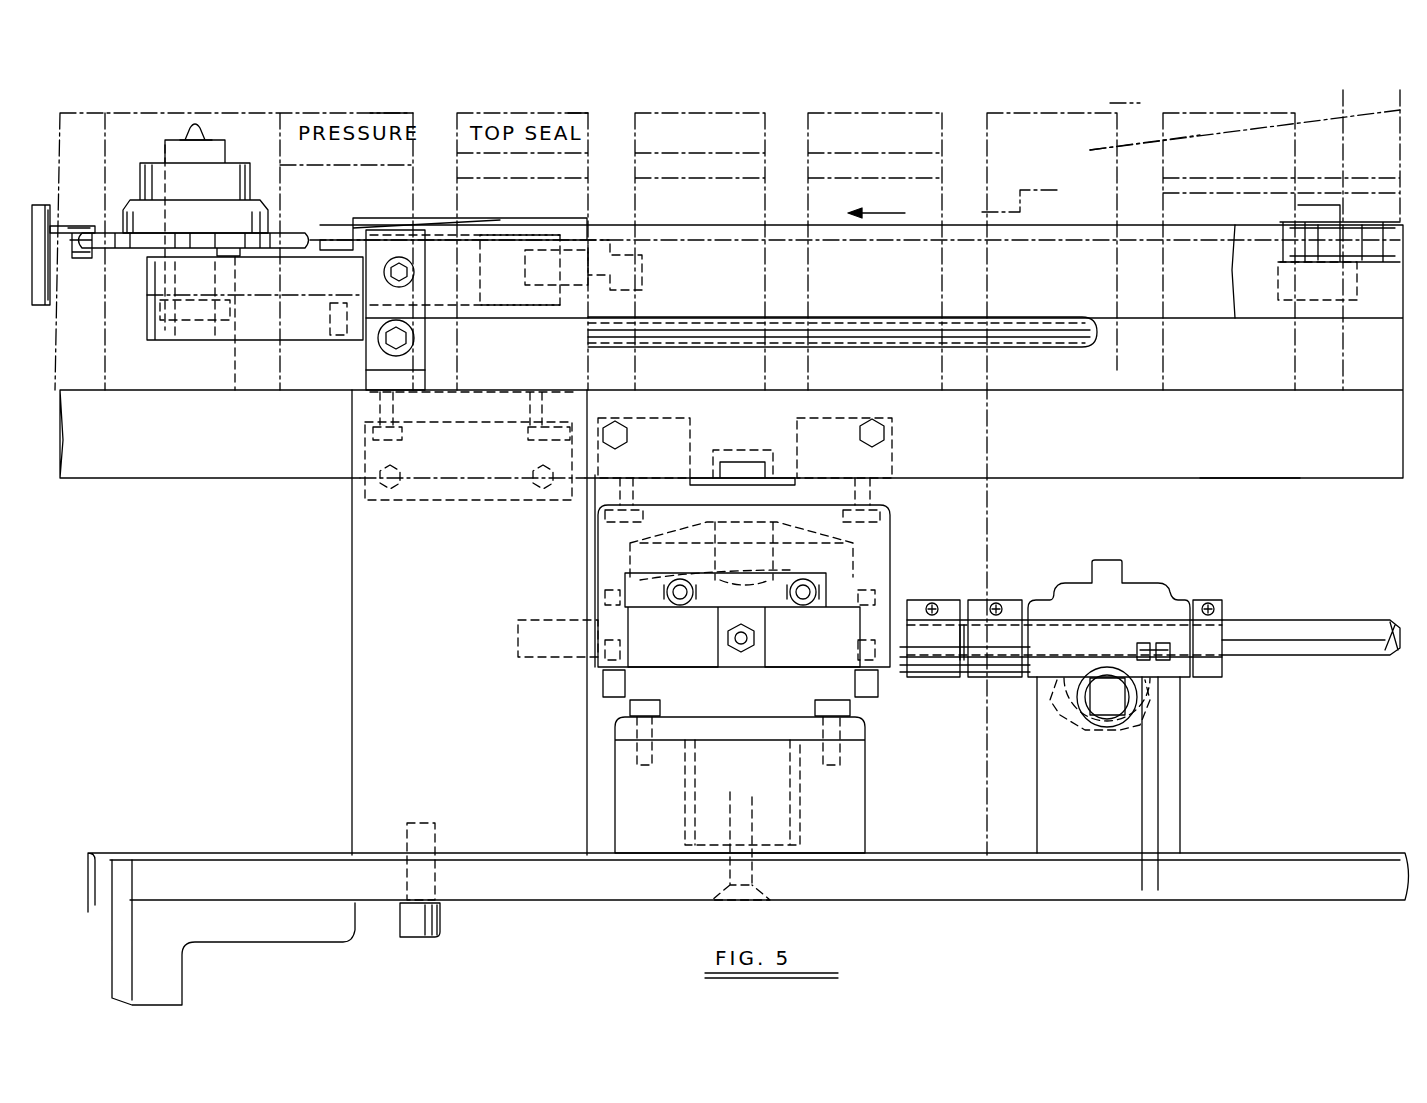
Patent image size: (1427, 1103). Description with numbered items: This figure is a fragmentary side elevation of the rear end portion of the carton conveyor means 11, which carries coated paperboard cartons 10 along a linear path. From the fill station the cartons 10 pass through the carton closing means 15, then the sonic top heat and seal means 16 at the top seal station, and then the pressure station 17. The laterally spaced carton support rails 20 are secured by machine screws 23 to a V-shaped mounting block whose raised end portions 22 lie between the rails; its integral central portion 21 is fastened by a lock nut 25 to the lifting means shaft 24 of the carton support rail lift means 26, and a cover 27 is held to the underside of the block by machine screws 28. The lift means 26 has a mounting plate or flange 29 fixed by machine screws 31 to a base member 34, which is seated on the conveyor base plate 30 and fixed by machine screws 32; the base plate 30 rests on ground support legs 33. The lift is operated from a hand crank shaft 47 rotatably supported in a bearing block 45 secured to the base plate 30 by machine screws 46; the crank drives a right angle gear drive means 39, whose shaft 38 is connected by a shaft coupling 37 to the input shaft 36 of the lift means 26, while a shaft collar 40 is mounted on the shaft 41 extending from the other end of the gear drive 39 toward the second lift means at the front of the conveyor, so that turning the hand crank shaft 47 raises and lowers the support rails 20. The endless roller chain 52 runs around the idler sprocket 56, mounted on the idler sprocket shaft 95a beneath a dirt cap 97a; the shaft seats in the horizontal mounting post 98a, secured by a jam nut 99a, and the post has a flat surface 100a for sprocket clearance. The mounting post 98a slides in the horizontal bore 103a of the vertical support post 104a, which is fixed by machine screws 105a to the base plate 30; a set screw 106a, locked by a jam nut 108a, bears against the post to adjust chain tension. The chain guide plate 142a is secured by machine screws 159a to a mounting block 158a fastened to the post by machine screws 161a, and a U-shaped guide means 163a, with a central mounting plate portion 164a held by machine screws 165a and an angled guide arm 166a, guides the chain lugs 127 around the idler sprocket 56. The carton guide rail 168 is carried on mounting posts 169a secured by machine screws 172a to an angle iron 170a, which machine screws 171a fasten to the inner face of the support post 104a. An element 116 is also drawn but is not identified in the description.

The cartons 10 is at (285, 170).
The carton conveyor means 11 is at (1268, 480).
The carton closing means 15 is at (1150, 135).
The sonic top heat and seal means 16 is at (568, 112).
The pressure station 17 is at (372, 112).
The carton support rails 20 is at (1338, 462).
The integral central portion 21 is at (710, 495).
The raised end portions 22 is at (797, 434).
The machine screws 23 is at (625, 440).
The lifting means shaft 24 is at (765, 495).
The lock nut 25 is at (775, 463).
The carton support rail lift means 26 is at (850, 580).
The cover 27 is at (860, 553).
The machine screws 28 is at (598, 532).
The mounting plate or flange 29 is at (805, 730).
The conveyor machine base plate 30 is at (900, 890).
The machine screws 31 is at (660, 706).
The machine screws 32 is at (755, 878).
The ground support legs 33 is at (295, 930).
The base member 34 is at (850, 825).
The input shaft 36 is at (905, 620).
The shaft coupling 37 is at (928, 650).
The right angle gear drive shaft 38 is at (1005, 600).
The right angle gear drive means 39 is at (1143, 580).
The shaft collar 40 is at (1215, 648).
The gear shaft 41 is at (1325, 625).
The bearing block 45 is at (1172, 810).
The machine screws 46 is at (1145, 643).
The hand crank shaft 47 is at (1118, 705).
The conveyor chain 52 is at (1272, 250).
The idler sprocket 56 is at (134, 249).
The idler sprocket shaft 95a is at (212, 158).
The dirt cap 97a is at (165, 172).
The mounting post 98a is at (157, 295).
The jam nut 99a is at (190, 318).
The flat surface 100a is at (293, 255).
The horizontal bore 103a is at (495, 235).
The vertical support post 104a is at (368, 793).
The machine screws 105a is at (442, 930).
The set screw 106a is at (645, 272).
The jam nut 108a is at (640, 225).
The bracket 116 is at (68, 226).
The lugs 127 is at (50, 206).
The chain guide plate 142a is at (1195, 318).
The mounting block 158a is at (367, 372).
The machine screws 159a is at (430, 262).
The machine screws 161a is at (405, 345).
The U-shaped guide means 163a is at (230, 340).
The central mounting plate portion 164a is at (345, 280).
The machine screws 165a is at (335, 360).
The guide arm 166a is at (203, 323).
The carton guide rail 168 is at (1057, 348).
The mounting posts 169a is at (530, 407).
The angle iron 170a is at (460, 500).
The machine screws 171a is at (355, 505).
The machine screws 172a is at (530, 445).